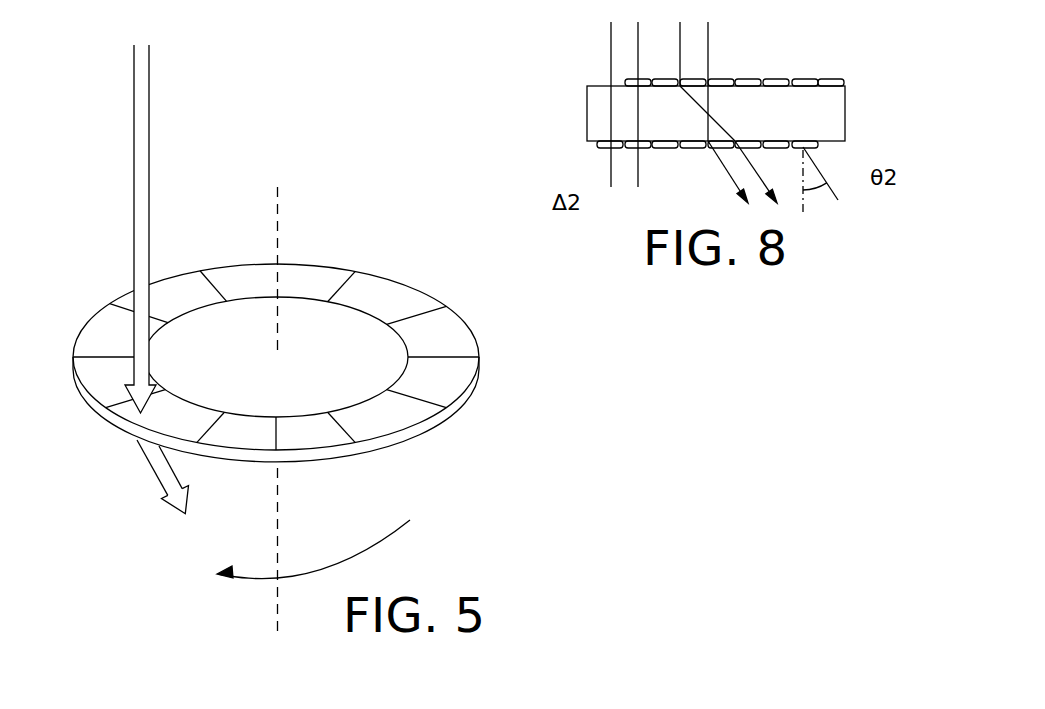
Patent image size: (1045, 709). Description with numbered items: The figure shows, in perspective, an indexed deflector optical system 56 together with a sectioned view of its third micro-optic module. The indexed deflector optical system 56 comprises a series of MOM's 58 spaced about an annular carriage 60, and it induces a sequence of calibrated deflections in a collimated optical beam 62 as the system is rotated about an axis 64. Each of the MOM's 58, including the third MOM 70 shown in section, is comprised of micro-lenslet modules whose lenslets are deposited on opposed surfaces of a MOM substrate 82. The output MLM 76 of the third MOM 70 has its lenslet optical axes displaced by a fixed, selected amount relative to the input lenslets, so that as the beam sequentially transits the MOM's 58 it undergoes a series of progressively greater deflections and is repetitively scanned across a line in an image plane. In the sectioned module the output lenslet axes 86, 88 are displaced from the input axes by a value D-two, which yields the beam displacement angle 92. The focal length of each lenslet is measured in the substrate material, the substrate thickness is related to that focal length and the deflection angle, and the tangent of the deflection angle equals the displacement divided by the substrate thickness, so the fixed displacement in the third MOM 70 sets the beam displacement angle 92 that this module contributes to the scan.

In FIG. 5, the indexed deflector optical system 56 is at (308, 318).
In FIG. 5, the MOM's 58 is at (88, 345).
In FIG. 5, the annular carriage 60 is at (383, 450).
In FIG. 5, the collimated optical beam 62 is at (134, 146).
In FIG. 5, the axis 64 is at (278, 227).
In FIG. 8, the third MOM 70 is at (741, 100).
In FIG. 8, the MLM 76 is at (603, 143).
In FIG. 8, the MOM substrate 82 is at (822, 113).
In FIG. 8, the output lenslet axis 86 is at (611, 72).
In FIG. 8, the output lenslet axis 88 is at (638, 174).
In FIG. 8, the beam displacement angle 92 is at (815, 187).